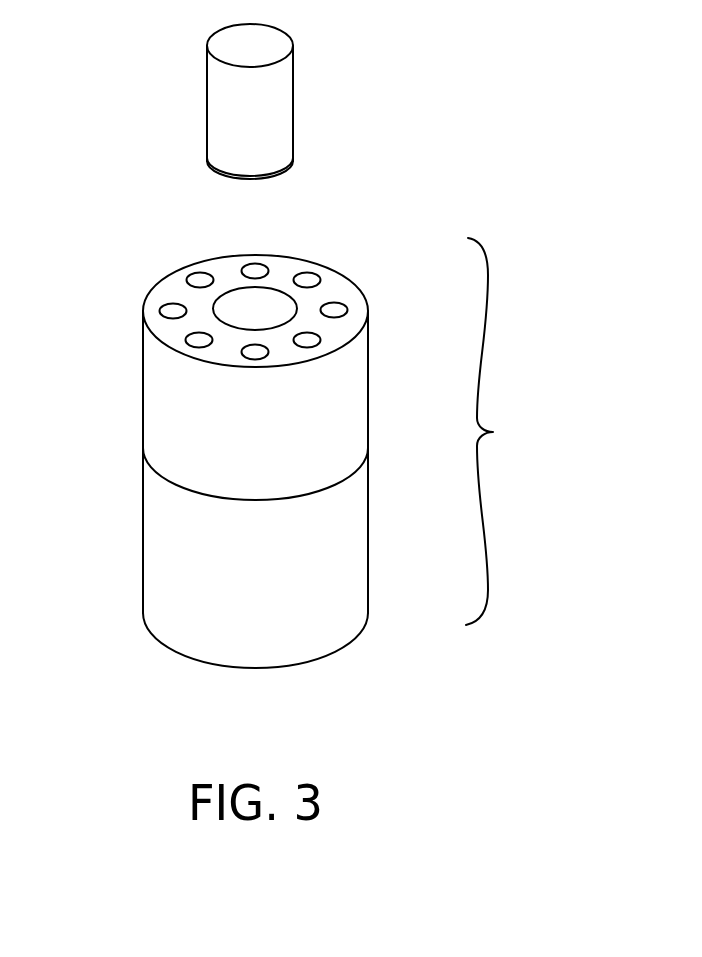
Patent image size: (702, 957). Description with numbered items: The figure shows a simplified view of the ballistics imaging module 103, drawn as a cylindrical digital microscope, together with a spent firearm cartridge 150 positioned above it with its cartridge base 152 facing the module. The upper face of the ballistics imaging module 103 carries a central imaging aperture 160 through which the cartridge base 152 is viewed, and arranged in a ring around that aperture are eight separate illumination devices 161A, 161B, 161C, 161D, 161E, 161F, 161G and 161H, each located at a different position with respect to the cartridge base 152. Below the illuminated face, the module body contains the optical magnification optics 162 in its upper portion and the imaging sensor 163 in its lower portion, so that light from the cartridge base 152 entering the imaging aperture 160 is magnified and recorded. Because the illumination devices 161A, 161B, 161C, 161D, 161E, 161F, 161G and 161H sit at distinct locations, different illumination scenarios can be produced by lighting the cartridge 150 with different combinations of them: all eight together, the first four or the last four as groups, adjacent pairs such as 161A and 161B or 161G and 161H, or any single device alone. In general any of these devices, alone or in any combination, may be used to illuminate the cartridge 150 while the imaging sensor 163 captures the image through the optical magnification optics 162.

The ballistics imaging module 103 is at (493, 432).
The spent firearm cartridge 150 is at (293, 107).
The cartridge base 152 is at (288, 164).
The imaging aperture 160 is at (258, 312).
The illumination device 161A is at (159, 311).
The illumination device 161B is at (187, 277).
The illumination device 161C is at (255, 263).
The illumination device 161D is at (320, 276).
The illumination device 161E is at (348, 312).
The illumination device 161F is at (313, 347).
The illumination device 161G is at (255, 359).
The illumination device 161H is at (193, 347).
The optical magnification optics 162 is at (143, 422).
The imaging sensor 163 is at (143, 550).